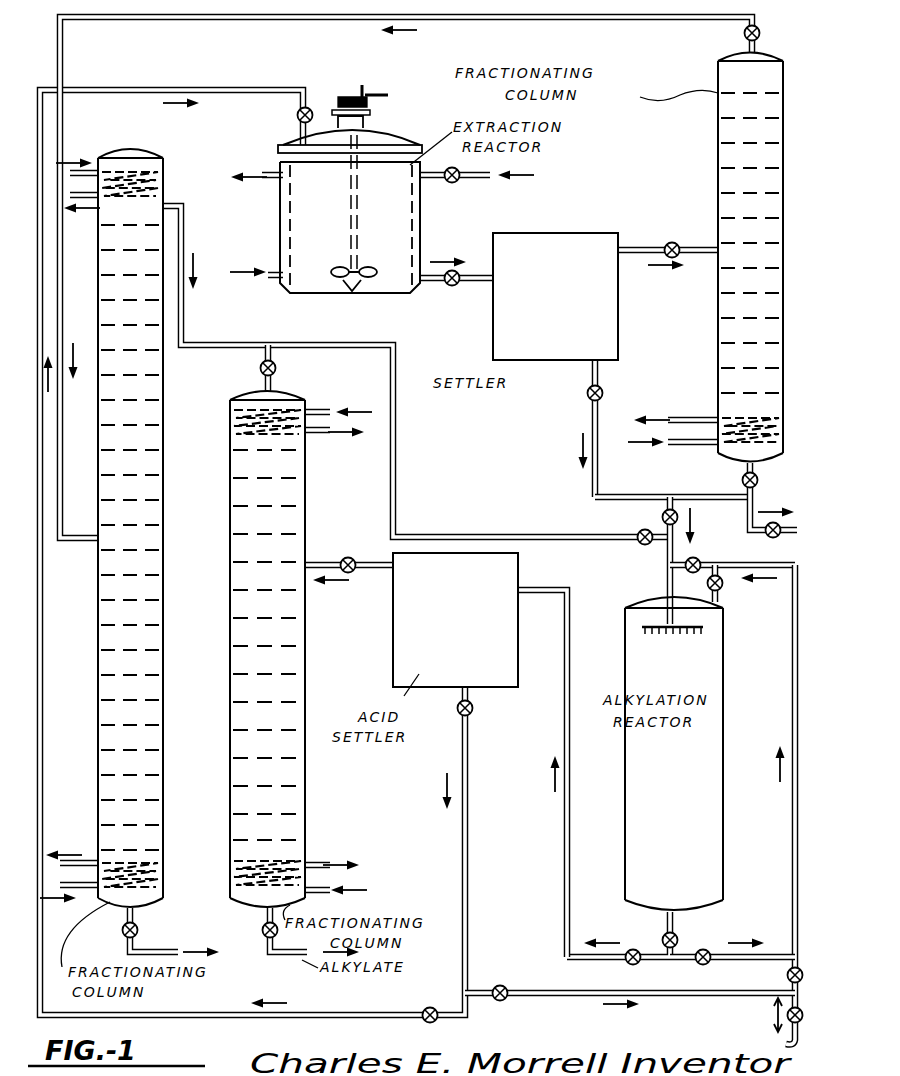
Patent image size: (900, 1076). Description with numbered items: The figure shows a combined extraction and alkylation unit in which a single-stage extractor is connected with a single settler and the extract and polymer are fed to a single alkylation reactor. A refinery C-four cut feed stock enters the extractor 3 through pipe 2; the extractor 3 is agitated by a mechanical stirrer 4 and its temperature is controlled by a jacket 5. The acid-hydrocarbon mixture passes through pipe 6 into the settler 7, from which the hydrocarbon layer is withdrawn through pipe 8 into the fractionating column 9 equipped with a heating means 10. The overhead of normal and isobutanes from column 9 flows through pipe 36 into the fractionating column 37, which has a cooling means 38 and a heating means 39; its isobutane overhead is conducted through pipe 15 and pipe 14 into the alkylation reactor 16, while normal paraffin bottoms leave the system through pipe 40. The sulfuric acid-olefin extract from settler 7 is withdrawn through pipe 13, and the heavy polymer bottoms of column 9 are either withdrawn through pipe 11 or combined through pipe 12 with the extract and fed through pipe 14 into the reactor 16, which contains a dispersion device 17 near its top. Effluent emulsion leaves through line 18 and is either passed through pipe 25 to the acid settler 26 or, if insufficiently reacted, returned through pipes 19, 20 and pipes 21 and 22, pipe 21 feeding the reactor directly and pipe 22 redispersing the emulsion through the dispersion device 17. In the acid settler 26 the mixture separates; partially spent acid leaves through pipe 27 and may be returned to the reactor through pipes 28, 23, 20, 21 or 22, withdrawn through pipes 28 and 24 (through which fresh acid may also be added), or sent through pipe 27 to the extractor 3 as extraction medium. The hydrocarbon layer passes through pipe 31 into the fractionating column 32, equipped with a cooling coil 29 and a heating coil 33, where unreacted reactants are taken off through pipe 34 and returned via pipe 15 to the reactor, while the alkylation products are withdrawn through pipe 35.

The pipe 2 is at (476, 180).
The extractor 3 is at (359, 209).
The mechanical stirrer 4 is at (372, 285).
The jacket 5 is at (416, 245).
The pipe 6 is at (462, 282).
The settler 7 is at (552, 247).
The pipe 8 is at (634, 246).
The fractionating column 9 is at (718, 152).
The heating means 10 is at (728, 418).
The pipe 11 is at (760, 503).
The pipe 12 is at (700, 487).
The pipe 13 is at (600, 372).
The pipe 14 is at (662, 560).
The pipe 15 is at (200, 347).
The alkylation reactor 16 is at (633, 660).
The dispersion device 17 is at (640, 624).
The line 18 is at (660, 940).
The pipe 19 is at (680, 955).
The pipe 20 is at (790, 838).
The pipe 21 is at (722, 590).
The pipe 22 is at (702, 563).
The pipe 23 is at (785, 978).
The outlet pipe 24 is at (785, 1035).
The pipe 25 is at (565, 882).
The acid settler 26 is at (408, 628).
The pipe 27 is at (183, 88).
The pipe 28 is at (510, 993).
The cooling coil 29 is at (233, 413).
The pipe 31 is at (330, 563).
The fractionating column 32 is at (290, 512).
The heating coil 33 is at (290, 858).
The pipe 34 is at (279, 370).
The pipe 35 is at (265, 935).
The pipe 36 is at (64, 36).
The fractionating column 37 is at (150, 456).
The cooling means 38 is at (97, 165).
The heating means 39 is at (150, 868).
The pipe 40 is at (152, 950).